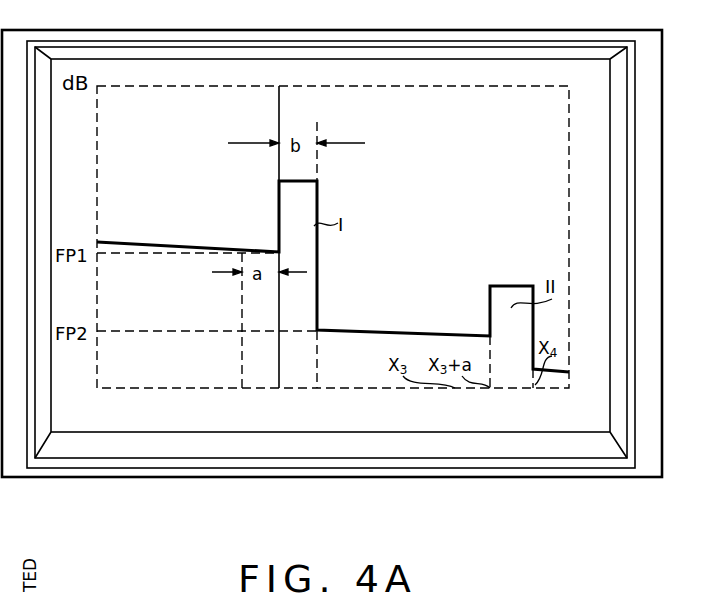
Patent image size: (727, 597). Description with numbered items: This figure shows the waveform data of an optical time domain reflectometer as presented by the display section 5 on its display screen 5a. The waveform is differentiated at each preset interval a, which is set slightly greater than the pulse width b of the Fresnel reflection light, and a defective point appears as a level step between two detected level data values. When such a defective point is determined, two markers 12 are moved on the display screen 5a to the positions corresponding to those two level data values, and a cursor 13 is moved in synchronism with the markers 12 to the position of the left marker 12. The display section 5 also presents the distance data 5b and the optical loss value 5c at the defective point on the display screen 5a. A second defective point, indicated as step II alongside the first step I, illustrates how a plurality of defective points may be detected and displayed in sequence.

The display section 5 is at (155, 433).
The display screen 5a is at (121, 386).
The distance data 5b is at (620, 401).
The optical loss value 5c is at (603, 419).
The markers 12 is at (279, 389).
The cursor 13 is at (280, 118).